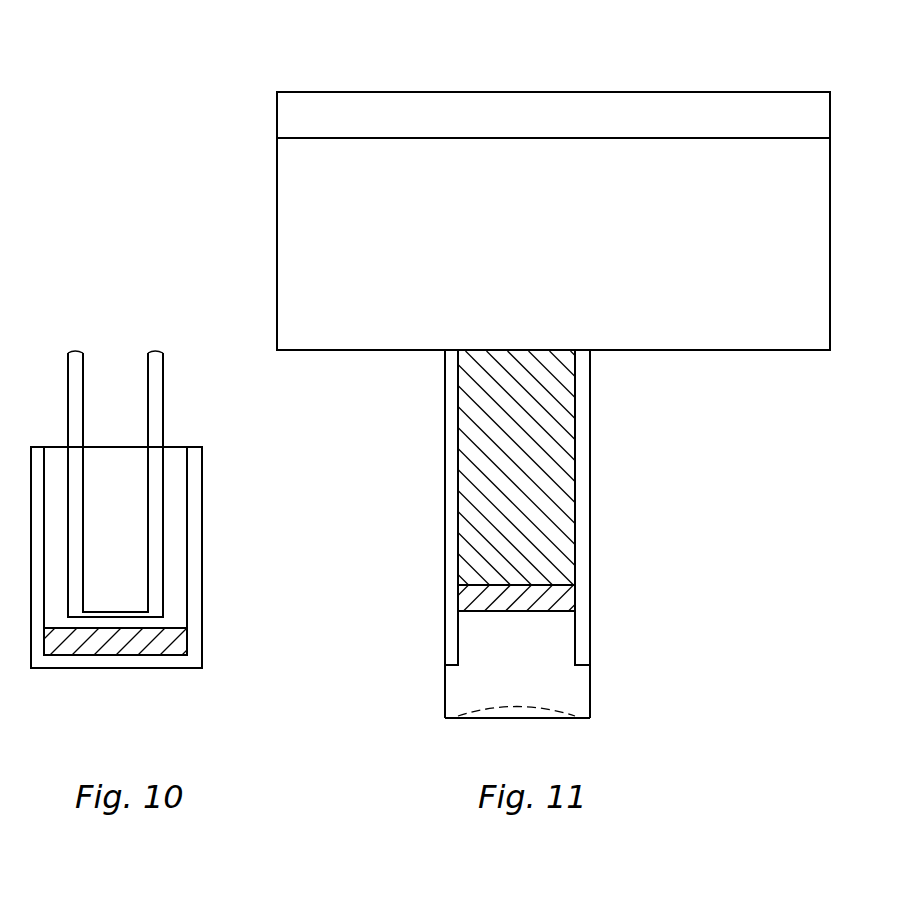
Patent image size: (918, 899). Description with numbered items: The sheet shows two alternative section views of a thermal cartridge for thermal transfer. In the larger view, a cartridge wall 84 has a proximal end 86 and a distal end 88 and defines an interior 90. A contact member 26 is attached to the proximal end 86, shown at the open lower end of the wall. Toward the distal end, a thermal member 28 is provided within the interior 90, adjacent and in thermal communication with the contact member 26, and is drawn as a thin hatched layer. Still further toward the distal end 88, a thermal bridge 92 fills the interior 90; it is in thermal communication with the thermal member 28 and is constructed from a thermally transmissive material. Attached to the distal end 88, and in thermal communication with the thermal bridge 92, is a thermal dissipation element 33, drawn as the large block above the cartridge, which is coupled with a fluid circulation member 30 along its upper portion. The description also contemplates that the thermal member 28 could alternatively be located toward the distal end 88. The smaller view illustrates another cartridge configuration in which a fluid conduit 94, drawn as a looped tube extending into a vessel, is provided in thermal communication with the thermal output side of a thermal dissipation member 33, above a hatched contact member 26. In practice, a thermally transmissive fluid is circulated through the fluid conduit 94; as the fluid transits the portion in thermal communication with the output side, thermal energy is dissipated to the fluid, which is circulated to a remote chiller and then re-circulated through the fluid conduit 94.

In FIG. 10, the contact member 26 is at (183, 638).
In FIG. 11, the contact member 26 is at (567, 686).
In FIG. 11, the thermal member 28 is at (575, 596).
In FIG. 11, the fluid circulation member 30 is at (277, 103).
In FIG. 11, the thermal dissipation element 33 is at (277, 190).
In FIG. 11, the cartridge wall 84 is at (590, 533).
In FIG. 11, the proximal end 86 is at (452, 667).
In FIG. 11, the distal end 88 is at (592, 357).
In FIG. 11, the interior 90 is at (527, 480).
In FIG. 11, the thermal bridge 92 is at (480, 444).
In FIG. 10, the fluid conduit 94 is at (157, 547).